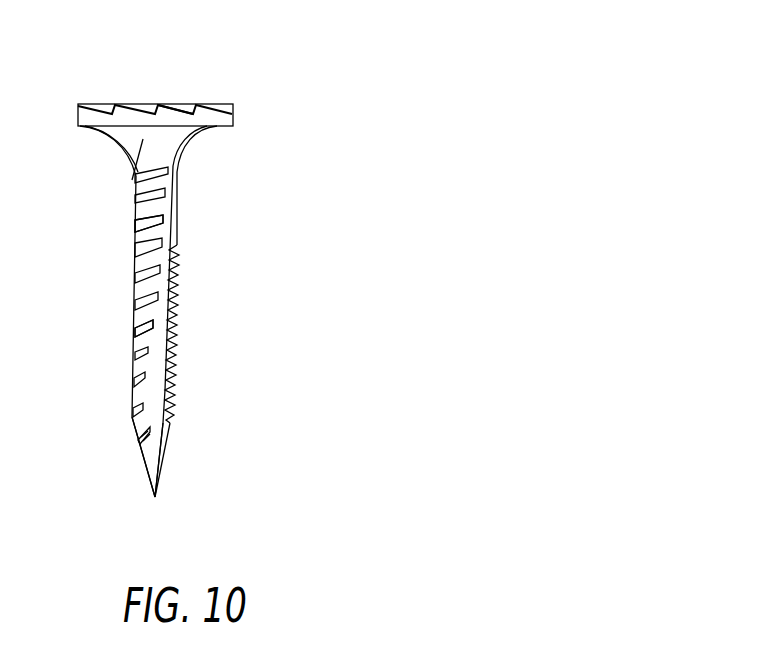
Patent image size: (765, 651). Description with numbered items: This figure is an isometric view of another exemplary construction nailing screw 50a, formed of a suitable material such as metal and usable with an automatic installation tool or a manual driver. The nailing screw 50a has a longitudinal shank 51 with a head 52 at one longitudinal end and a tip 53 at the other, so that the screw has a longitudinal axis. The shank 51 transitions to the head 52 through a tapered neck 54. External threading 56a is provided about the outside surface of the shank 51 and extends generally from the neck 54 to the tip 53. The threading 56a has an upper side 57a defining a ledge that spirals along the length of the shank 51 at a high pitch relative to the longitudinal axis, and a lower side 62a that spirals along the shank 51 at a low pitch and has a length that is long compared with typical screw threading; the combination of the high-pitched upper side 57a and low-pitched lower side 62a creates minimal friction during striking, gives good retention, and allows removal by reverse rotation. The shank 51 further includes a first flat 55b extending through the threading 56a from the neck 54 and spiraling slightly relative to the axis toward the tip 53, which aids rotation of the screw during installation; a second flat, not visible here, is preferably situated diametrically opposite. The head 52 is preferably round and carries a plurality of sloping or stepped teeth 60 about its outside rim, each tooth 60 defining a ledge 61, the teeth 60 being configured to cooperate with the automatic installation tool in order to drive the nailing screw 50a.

The nailing screw 50a is at (410, 122).
The shank 51 is at (176, 331).
The head 52 is at (200, 116).
The tip 53 is at (157, 498).
The tapered neck 54 is at (128, 159).
The first flat 55b is at (175, 388).
The external threading 56a is at (136, 272).
The upper side 57a is at (135, 233).
The teeth 60 is at (137, 115).
The ledge 61 is at (234, 115).
The lower side 62a is at (137, 327).